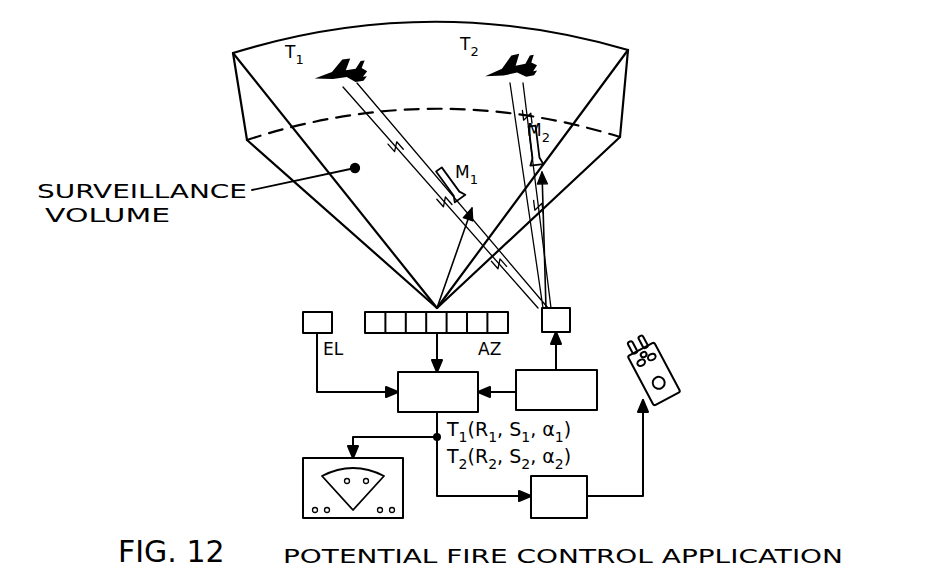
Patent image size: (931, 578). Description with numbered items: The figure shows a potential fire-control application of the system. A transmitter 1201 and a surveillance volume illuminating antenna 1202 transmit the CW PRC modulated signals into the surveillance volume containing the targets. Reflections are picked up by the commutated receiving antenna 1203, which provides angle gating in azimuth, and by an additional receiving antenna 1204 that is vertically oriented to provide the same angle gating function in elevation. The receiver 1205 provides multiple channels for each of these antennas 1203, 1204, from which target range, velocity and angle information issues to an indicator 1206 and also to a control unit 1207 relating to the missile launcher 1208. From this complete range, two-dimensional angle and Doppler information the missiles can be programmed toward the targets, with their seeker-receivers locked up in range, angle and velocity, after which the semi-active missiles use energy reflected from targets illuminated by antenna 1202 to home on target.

The transmitter 1201 is at (582, 372).
The surveillance volume illuminating antenna 1202 is at (570, 318).
The commutated receiving antenna 1203 is at (392, 312).
The additional receiving antenna 1204 is at (318, 312).
The receiver 1205 is at (415, 372).
The indicator 1206 is at (308, 484).
The control unit 1207 is at (587, 508).
The missile launcher 1208 is at (672, 372).